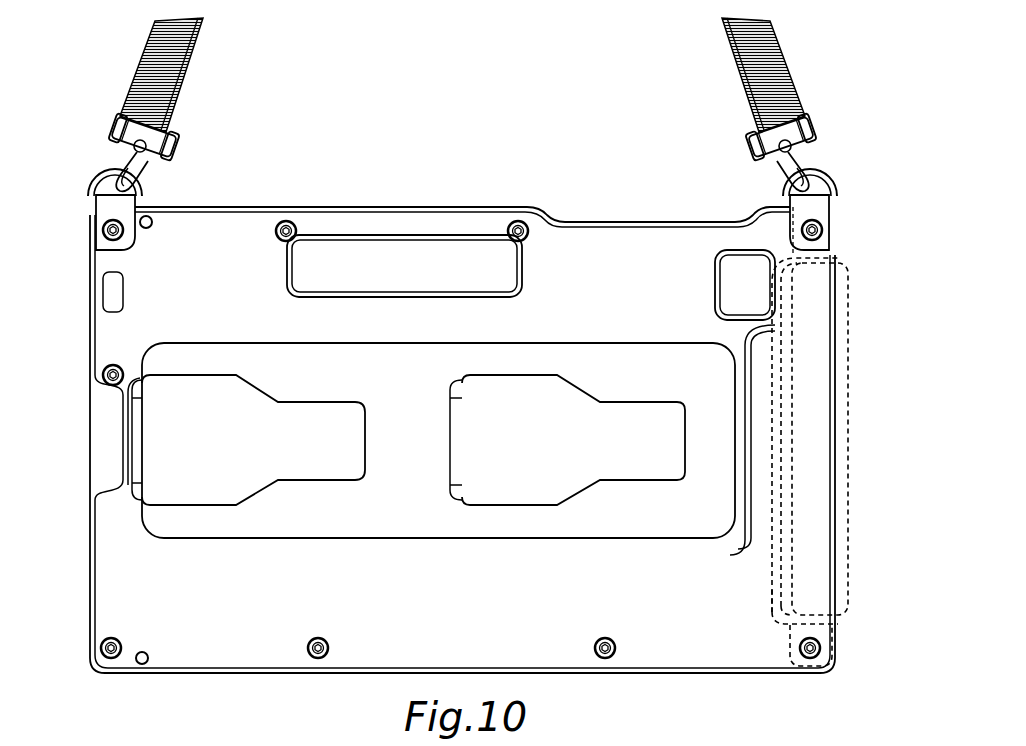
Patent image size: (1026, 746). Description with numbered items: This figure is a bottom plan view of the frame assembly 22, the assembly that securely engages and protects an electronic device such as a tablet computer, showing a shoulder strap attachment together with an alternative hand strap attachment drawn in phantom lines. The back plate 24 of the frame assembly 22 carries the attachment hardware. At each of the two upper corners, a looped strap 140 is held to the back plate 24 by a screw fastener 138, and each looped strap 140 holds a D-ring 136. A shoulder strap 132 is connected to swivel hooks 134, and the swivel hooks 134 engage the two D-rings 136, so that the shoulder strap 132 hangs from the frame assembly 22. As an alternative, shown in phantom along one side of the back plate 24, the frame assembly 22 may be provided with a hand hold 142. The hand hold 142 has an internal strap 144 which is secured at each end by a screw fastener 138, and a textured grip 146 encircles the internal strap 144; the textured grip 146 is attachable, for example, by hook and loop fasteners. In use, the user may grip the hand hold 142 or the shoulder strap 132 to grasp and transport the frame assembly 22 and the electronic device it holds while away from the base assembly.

The frame assembly 22 is at (364, 203).
The back plate 24 is at (590, 222).
The shoulder strap 132 is at (190, 58).
The swivel hooks 134 is at (140, 162).
The D-rings 136 is at (95, 176).
The screw fasteners 138 is at (103, 233).
The looped straps 140 is at (97, 207).
The hand hold 142 is at (840, 455).
The internal strap 144 is at (792, 640).
The textured grip 146 is at (790, 572).